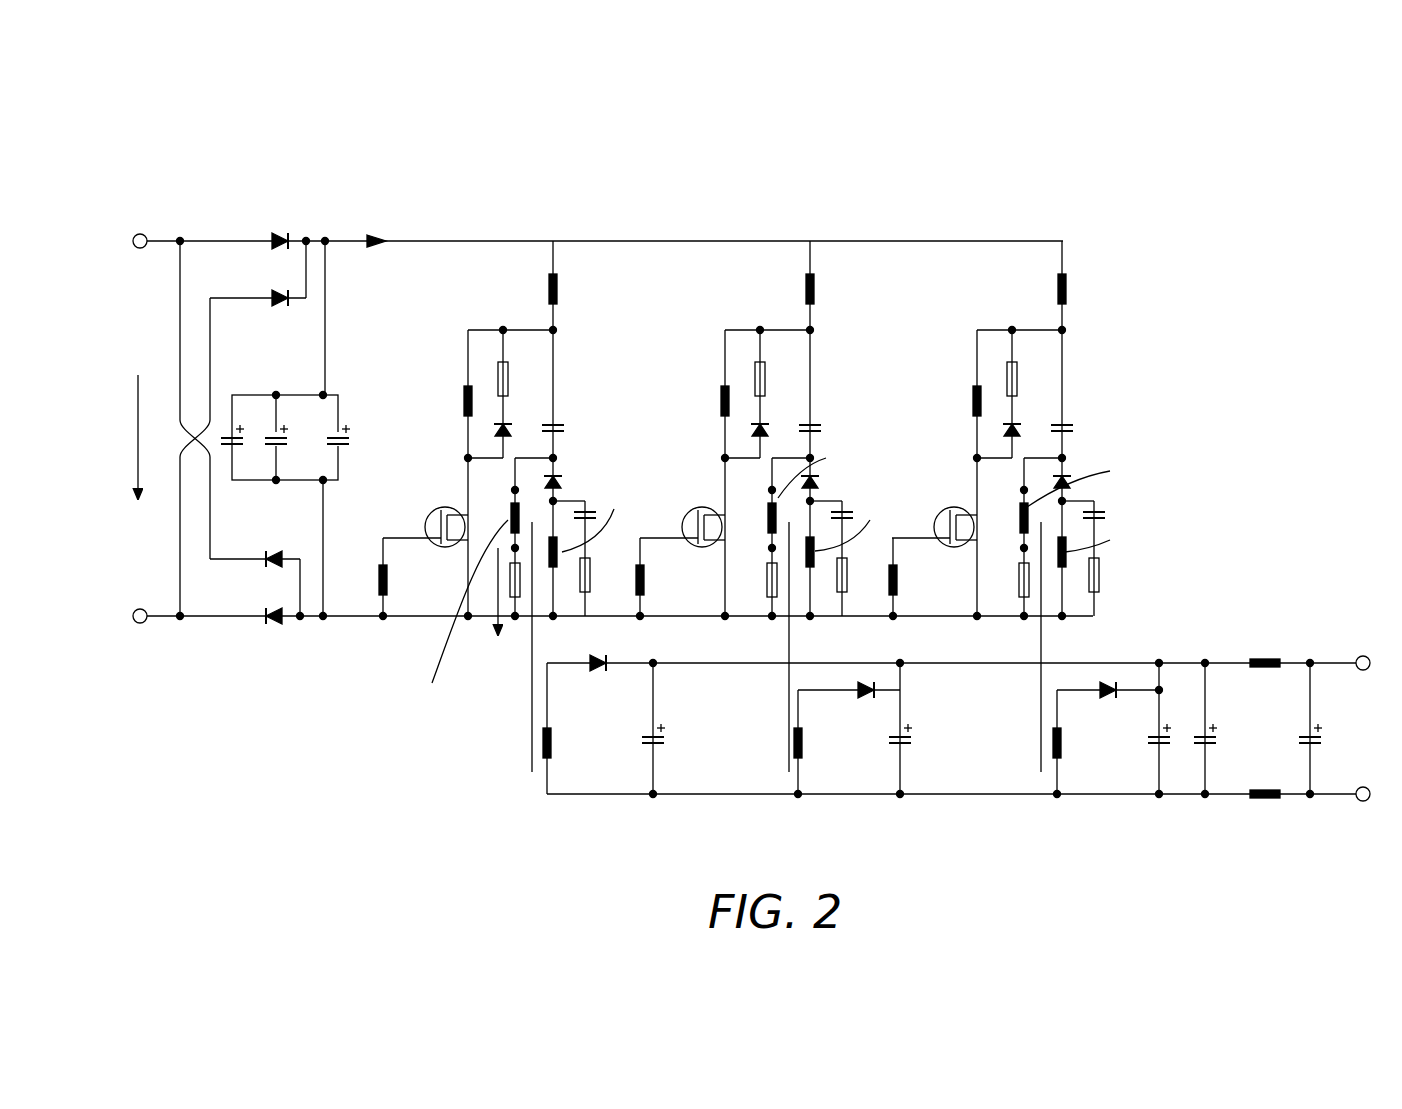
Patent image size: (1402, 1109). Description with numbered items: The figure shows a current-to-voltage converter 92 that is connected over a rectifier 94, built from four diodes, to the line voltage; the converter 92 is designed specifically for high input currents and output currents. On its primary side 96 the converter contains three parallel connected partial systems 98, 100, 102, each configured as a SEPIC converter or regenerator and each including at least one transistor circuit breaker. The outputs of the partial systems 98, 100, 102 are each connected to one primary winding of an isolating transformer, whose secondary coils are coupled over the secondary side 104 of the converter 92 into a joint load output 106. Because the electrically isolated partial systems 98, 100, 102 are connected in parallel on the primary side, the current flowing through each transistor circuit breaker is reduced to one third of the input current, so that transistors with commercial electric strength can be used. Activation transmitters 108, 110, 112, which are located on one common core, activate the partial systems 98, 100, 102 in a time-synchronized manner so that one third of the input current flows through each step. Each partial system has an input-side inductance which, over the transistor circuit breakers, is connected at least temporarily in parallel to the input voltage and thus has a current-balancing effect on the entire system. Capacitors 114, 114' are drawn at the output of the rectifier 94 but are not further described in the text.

The current-to-voltage converter 92 is at (1241, 218).
The rectifier 94 is at (215, 259).
The primary side 96 is at (1107, 428).
The partial system 98 is at (487, 259).
The partial system 100 is at (760, 261).
The partial system 102 is at (1012, 261).
The secondary side 104 is at (508, 799).
The joint load output 106 is at (1292, 657).
The activation transmitter 108 is at (357, 586).
The activation transmitter 110 is at (612, 584).
The activation transmitter 112 is at (880, 577).
The smoothing capacitor 114 is at (279, 438).
The smoothing capacitor 114' is at (298, 427).